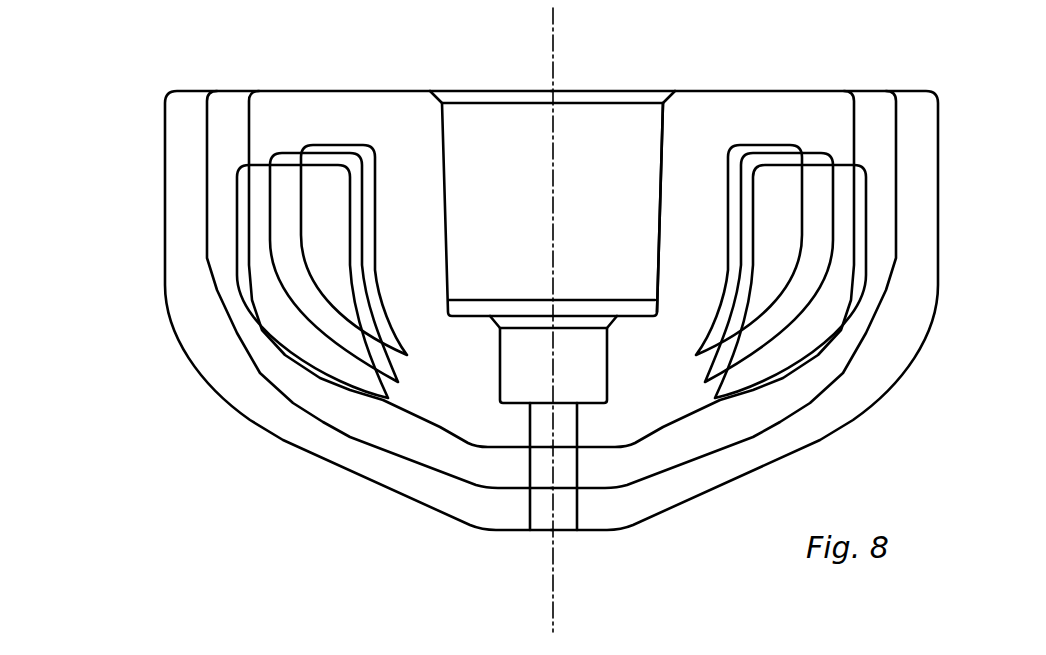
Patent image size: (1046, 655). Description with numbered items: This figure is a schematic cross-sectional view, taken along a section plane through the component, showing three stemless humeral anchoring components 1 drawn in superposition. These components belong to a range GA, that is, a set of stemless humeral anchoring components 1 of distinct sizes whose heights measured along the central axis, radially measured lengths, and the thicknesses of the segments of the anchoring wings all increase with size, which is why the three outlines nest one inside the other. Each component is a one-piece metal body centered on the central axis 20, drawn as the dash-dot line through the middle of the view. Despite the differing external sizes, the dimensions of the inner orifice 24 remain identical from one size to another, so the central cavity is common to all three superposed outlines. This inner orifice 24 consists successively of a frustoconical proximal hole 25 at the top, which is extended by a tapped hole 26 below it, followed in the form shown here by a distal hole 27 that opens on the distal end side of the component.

The stemless humeral anchoring component 1 is at (501, 280).
The range GA is at (157, 310).
The central axis 20 is at (556, 618).
The inner orifice 24 is at (517, 136).
The frustoconical proximal hole 25 is at (617, 124).
The tapped hole 26 is at (597, 387).
The distal hole 27 is at (557, 514).